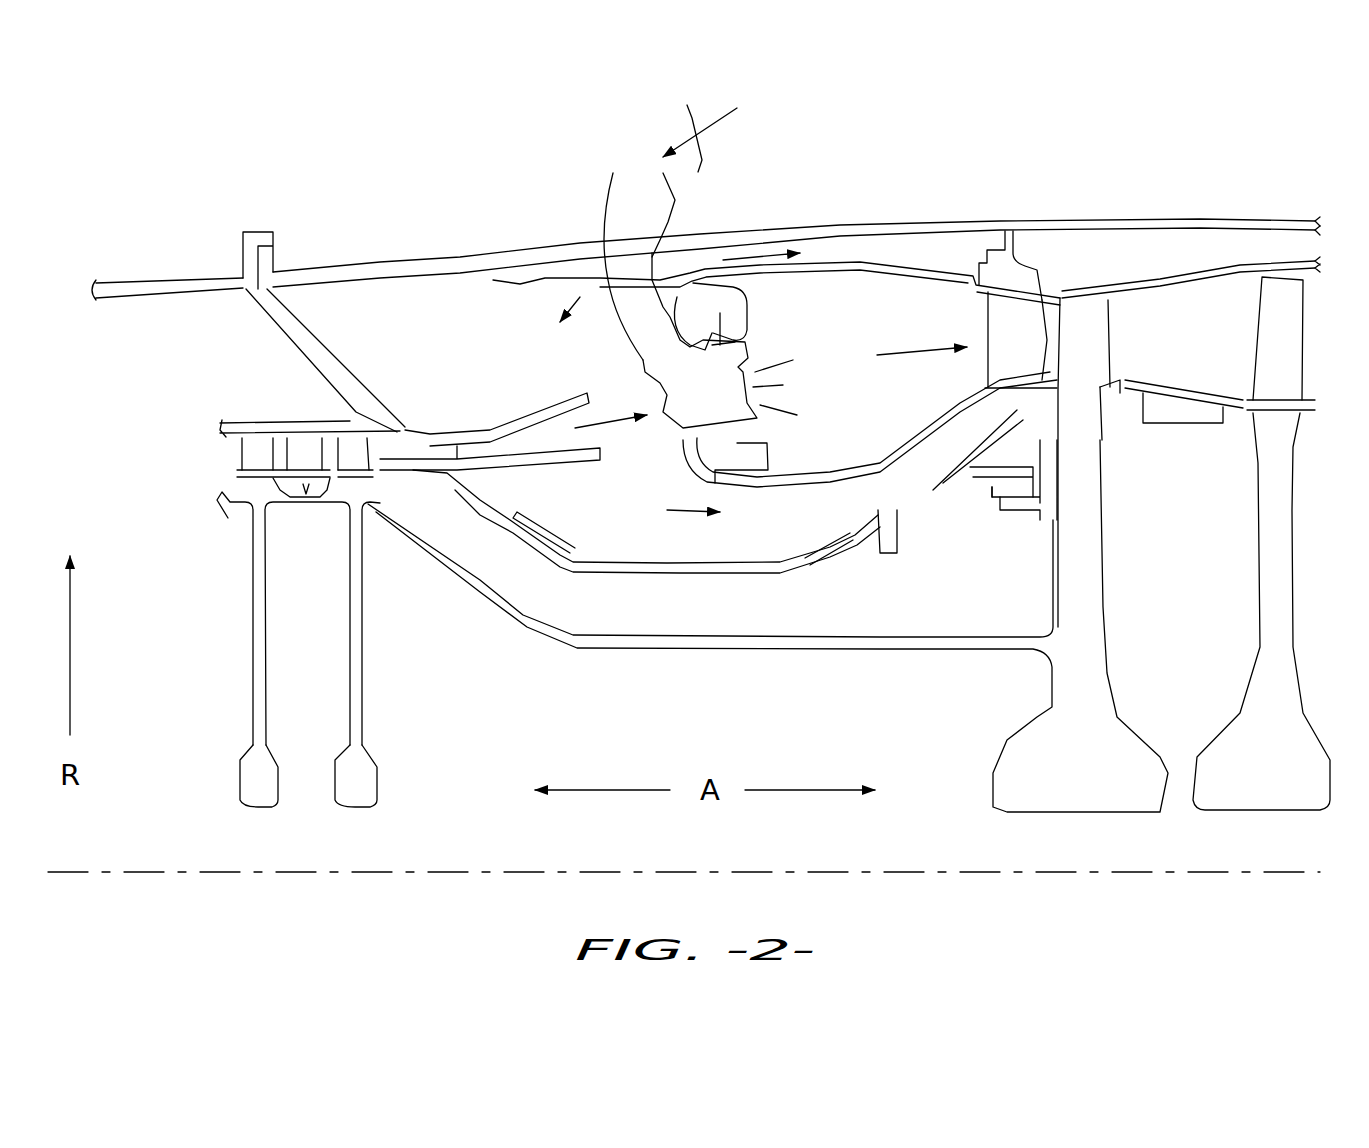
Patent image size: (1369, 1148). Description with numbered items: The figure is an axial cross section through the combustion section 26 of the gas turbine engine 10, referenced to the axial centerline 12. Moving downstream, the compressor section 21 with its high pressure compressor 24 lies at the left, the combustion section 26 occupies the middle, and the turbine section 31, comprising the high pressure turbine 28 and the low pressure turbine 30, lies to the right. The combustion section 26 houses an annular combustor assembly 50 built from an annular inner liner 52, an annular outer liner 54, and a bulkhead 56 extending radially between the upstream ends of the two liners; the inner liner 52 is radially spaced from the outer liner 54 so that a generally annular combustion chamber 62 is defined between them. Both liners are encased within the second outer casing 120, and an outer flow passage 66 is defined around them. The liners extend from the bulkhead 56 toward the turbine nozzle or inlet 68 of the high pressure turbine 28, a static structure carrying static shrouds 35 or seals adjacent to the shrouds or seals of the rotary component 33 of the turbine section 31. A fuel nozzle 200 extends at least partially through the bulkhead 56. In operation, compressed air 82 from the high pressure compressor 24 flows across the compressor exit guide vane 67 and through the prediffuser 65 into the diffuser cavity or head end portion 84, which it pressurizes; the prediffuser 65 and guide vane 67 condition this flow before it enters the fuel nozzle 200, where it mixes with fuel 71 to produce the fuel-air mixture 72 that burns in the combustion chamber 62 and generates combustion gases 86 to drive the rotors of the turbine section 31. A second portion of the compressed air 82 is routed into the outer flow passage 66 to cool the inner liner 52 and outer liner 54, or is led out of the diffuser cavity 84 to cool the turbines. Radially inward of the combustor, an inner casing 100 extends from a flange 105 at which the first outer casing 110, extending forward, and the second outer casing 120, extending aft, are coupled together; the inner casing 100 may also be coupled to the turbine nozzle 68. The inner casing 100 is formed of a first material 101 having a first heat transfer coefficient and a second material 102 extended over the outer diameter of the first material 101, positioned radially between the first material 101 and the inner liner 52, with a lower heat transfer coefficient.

The engine 10 is at (707, 90).
The axial centerline 12 is at (1033, 873).
The compressor section 21 is at (148, 182).
The high pressure (HP) compressor 24 is at (377, 697).
The combustion section 26 is at (850, 167).
The high pressure (HP) turbine 28 is at (1110, 320).
The low pressure (LP) turbine 30 is at (1287, 347).
The turbine section 31 is at (1253, 200).
The rotary component 33 is at (1110, 543).
The static shrouds 35 is at (1095, 283).
The combustor assembly 50 is at (860, 247).
The inner liner 52 is at (873, 457).
The outer liner 54 is at (873, 277).
The bulkhead 56 is at (757, 313).
The combustion chamber 62 is at (829, 380).
The prediffuser 65 is at (562, 443).
The outer flow passage 66 is at (923, 250).
The compressor exit guide vane (CEGV) 67 is at (438, 450).
The turbine nozzle or inlet 68 is at (1021, 340).
The fuel 71 is at (718, 113).
The fuel-air mixture 72 is at (787, 407).
The compressed air 82 is at (610, 417).
The diffuser cavity 84 is at (325, 416).
The combustion gases 86 is at (907, 347).
The inner casing 100 is at (248, 256).
The first material 101 is at (562, 563).
The second material 102 is at (633, 563).
The flange 105 is at (273, 214).
The first outer casing 110 is at (157, 280).
The second outer casing 120 is at (340, 275).
The fuel nozzle 200 is at (647, 167).